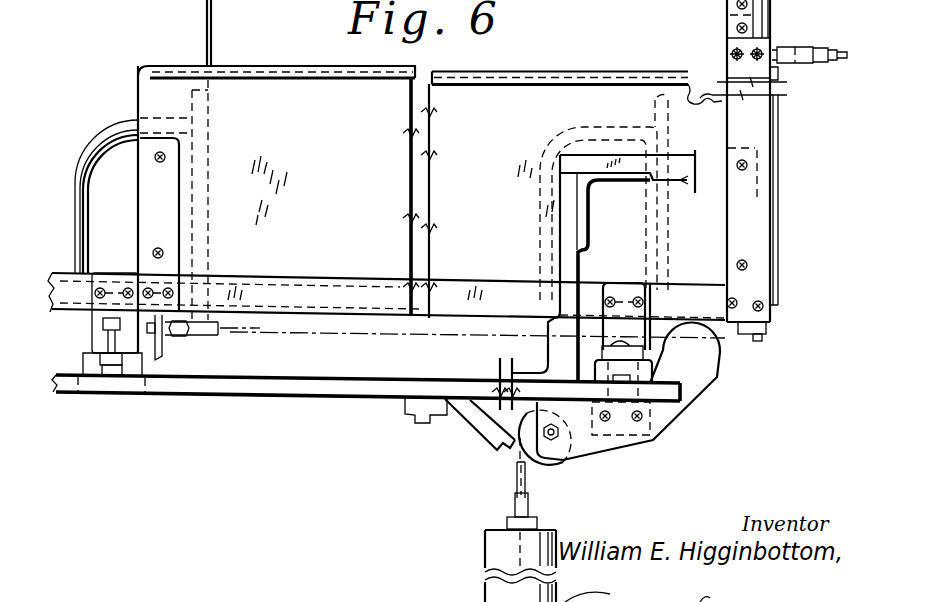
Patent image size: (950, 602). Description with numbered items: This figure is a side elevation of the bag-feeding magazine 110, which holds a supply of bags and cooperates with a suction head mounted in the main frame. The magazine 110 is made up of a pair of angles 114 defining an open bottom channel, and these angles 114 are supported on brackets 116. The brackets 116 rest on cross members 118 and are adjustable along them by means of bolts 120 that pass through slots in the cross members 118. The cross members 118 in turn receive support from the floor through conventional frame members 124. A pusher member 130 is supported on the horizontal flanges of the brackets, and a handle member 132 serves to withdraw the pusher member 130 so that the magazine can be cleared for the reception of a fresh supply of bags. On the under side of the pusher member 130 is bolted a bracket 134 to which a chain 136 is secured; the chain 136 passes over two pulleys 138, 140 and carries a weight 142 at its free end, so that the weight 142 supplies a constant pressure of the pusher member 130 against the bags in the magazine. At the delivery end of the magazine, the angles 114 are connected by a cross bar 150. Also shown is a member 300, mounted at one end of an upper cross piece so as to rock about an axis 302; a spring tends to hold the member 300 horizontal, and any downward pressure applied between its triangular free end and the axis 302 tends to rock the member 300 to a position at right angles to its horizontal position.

The magazine 110 is at (360, 130).
The angles 114 is at (351, 274).
The brackets 116 is at (95, 325).
The cross members 118 is at (92, 386).
The bolts 120 is at (97, 336).
The frame members 124 is at (328, 397).
The pusher member 130 is at (205, 167).
The handle member 132 is at (82, 156).
The bracket 134 is at (167, 353).
The chain 136 is at (218, 334).
The pulley 138 is at (722, 375).
The pulley 140 is at (560, 464).
The weight 142 is at (490, 548).
The cross bar 150 is at (740, 334).
The member 300 is at (815, 32).
The axis 302 is at (800, 62).